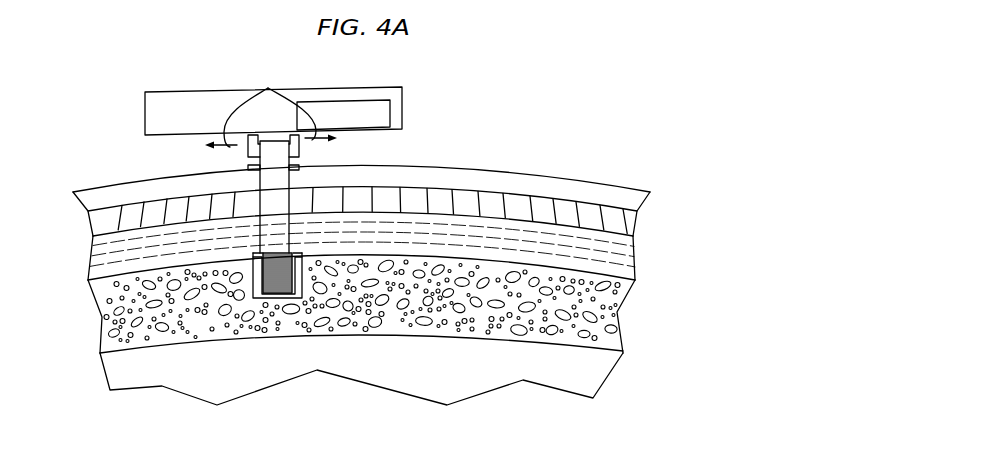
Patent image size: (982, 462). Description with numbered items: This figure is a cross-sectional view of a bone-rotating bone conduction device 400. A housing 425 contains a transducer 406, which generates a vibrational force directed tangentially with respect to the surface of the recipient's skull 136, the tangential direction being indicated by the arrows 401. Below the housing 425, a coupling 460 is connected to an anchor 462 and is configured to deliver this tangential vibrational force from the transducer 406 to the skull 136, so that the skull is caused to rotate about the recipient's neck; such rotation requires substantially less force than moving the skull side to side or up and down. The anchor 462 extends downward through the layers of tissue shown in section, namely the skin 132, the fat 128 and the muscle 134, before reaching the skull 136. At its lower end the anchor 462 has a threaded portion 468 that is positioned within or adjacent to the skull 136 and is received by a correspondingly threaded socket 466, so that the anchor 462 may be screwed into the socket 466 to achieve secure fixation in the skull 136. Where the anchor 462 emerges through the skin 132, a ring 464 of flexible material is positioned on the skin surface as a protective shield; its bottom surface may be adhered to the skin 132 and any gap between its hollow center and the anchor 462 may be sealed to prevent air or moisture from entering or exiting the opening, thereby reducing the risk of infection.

The bone conduction device 400 is at (478, 50).
The arrows 401 is at (268, 88).
The transducer 406 is at (344, 100).
The housing 425 is at (403, 108).
The coupling 460 is at (245, 148).
The anchor 462 is at (248, 168).
The ring 464 is at (299, 168).
The socket 466 is at (268, 298).
The threaded portion 468 is at (256, 268).
The skin 132 is at (78, 202).
The fat 128 is at (89, 230).
The muscle 134 is at (90, 268).
The skull 136 is at (101, 335).